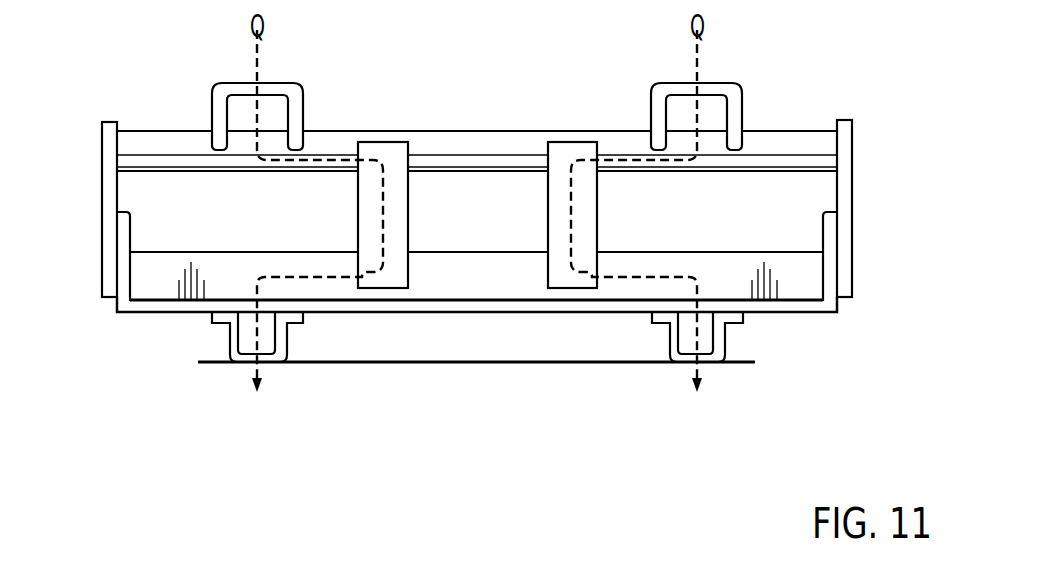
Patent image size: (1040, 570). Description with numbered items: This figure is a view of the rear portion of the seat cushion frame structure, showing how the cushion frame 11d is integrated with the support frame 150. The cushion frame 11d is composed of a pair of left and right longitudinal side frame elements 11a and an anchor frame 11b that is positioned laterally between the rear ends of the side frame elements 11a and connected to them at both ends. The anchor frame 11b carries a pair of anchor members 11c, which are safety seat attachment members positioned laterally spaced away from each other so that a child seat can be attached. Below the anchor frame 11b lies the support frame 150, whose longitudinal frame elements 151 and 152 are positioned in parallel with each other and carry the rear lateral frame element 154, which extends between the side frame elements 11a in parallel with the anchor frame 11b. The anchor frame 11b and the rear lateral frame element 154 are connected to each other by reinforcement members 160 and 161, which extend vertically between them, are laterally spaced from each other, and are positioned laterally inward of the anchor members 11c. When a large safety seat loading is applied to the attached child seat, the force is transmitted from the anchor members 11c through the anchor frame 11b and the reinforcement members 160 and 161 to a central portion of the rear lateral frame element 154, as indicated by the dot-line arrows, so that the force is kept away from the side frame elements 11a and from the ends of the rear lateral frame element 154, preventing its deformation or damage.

The side frame element 11a is at (110, 227).
The anchor frame 11b is at (468, 152).
The anchor member 11c is at (227, 90).
The cushion frame 11d is at (823, 97).
The support frame 150 is at (613, 318).
The longitudinal frame element 151 is at (233, 335).
The longitudinal frame element 152 is at (720, 335).
The rear lateral frame element 154 is at (457, 273).
The reinforcement member 160 is at (393, 280).
The reinforcement member 161 is at (562, 280).